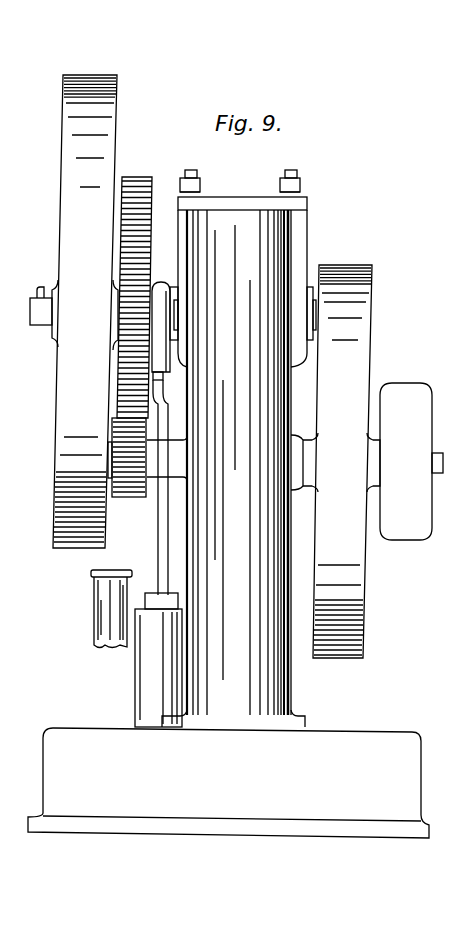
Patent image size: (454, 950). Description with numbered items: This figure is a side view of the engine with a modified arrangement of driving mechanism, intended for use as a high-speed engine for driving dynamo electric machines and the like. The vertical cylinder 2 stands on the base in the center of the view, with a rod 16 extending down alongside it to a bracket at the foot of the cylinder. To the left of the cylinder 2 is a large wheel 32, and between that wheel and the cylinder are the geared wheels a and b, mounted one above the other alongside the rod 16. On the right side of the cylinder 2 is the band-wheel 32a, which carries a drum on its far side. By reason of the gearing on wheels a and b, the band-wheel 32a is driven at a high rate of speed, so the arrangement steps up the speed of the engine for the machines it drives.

The cylinder 2 is at (228, 504).
The rod 16 is at (158, 504).
The wheel 32 is at (74, 311).
The band-wheel 32a is at (373, 461).
The wheel a is at (139, 297).
The wheel b is at (147, 456).